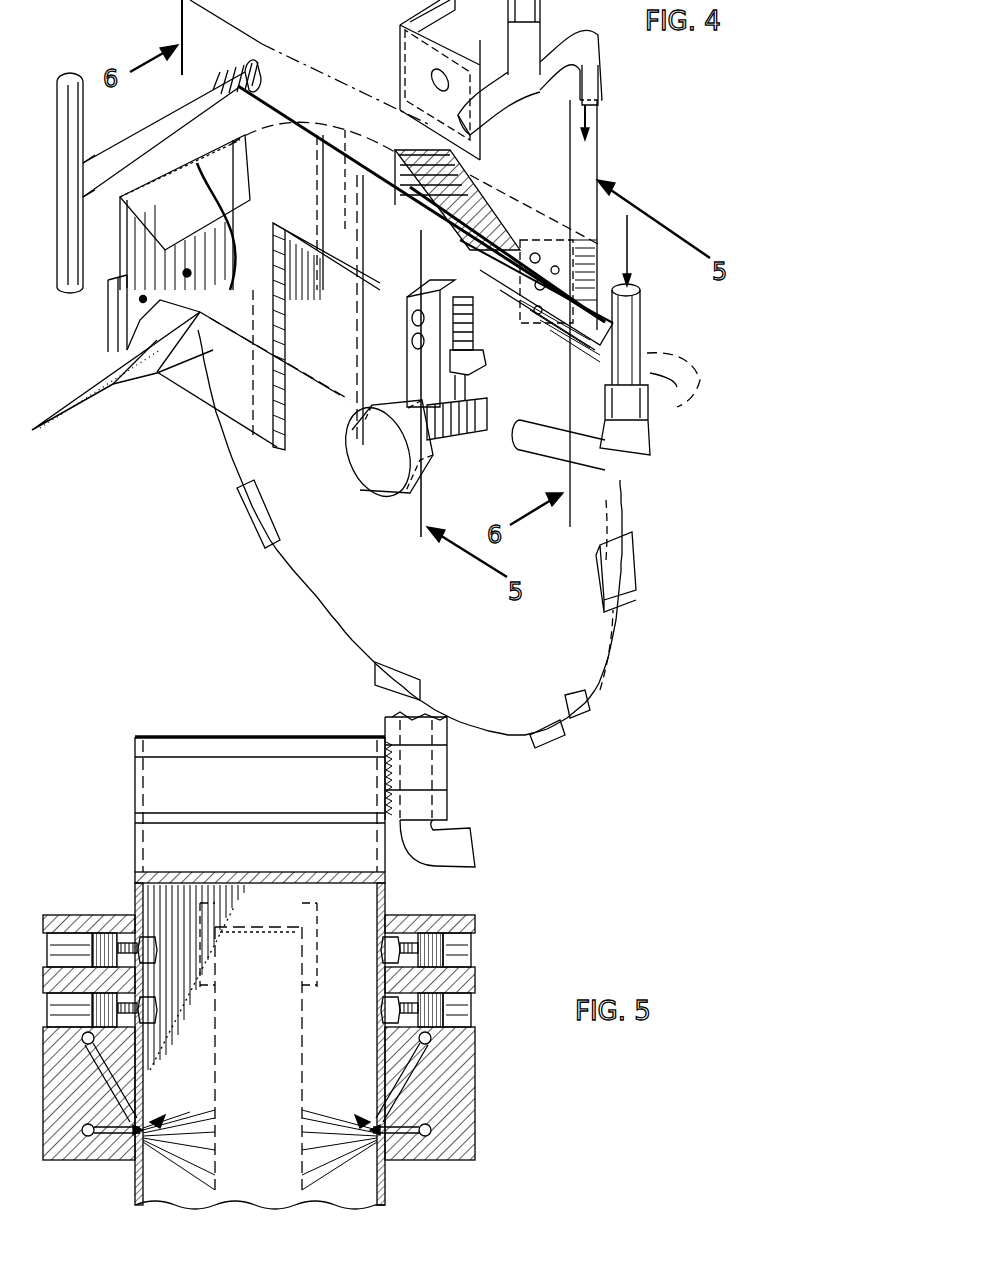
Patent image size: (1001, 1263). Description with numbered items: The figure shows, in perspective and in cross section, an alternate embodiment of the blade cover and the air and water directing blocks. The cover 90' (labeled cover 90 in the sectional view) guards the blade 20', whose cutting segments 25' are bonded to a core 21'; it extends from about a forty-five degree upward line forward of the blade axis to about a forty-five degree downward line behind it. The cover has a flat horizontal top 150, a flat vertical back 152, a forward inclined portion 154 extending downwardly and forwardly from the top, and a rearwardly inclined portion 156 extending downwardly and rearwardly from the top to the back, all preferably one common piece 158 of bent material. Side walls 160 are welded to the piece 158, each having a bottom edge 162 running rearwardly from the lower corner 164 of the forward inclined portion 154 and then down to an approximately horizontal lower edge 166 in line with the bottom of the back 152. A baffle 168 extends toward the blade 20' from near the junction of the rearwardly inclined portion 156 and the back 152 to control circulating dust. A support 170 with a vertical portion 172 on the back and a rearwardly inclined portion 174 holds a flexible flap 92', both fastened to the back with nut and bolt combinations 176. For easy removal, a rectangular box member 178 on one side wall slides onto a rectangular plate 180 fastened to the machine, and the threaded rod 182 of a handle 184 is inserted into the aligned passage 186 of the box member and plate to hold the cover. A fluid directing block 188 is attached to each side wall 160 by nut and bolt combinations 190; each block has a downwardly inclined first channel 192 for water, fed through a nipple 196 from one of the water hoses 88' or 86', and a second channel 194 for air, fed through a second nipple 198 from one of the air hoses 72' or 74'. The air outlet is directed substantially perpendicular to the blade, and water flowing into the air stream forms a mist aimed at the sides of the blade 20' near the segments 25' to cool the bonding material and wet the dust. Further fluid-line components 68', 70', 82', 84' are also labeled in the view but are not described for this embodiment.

In FIG. 4, the blade 20' is at (448, 532).
In FIG. 5, the blade 20' is at (287, 1058).
In FIG. 4, the core 21' is at (445, 614).
In FIG. 4, the cutting segments 25' is at (641, 572).
In FIG. 5, the cutting segments 25' is at (279, 940).
In FIG. 4, the vertical pipe 68' is at (646, 300).
In FIG. 4, the pipe fitting 70' is at (650, 421).
In FIG. 4, the hose 72' is at (686, 377).
In FIG. 4, the hose 74' is at (583, 454).
In FIG. 4, the inlet pipe 82' is at (543, 37).
In FIG. 4, the elbow pipe 84' is at (581, 56).
In FIG. 4, the hose 86' is at (604, 295).
In FIG. 4, the hose 88' is at (472, 103).
In FIG. 5, the cover 90 is at (240, 787).
In FIG. 4, the cover 90' is at (421, 177).
In FIG. 4, the flexible flap 92' is at (122, 371).
In FIG. 4, the top 150 is at (350, 75).
In FIG. 4, the back 152 is at (148, 242).
In FIG. 4, the forward inclined portion 154 is at (518, 195).
In FIG. 5, the forward inclined portion 154 is at (320, 772).
In FIG. 4, the rearwardly inclined portion 156 is at (268, 112).
In FIG. 4, the common piece 158 is at (512, 158).
In FIG. 5, the common piece 158 is at (253, 760).
In FIG. 4, the side walls 160 is at (192, 402).
In FIG. 5, the side walls 160 is at (393, 898).
In FIG. 4, the bottom edge 162 is at (377, 286).
In FIG. 4, the lower corner 164 is at (560, 370).
In FIG. 4, the lower edge 166 is at (250, 440).
In FIG. 4, the baffle 168 is at (183, 207).
In FIG. 4, the support 170 is at (138, 358).
In FIG. 4, the vertical portion 172 is at (125, 316).
In FIG. 4, the rearwardly inclined portion 174 is at (113, 373).
In FIG. 4, the nut and bolt combinations 176 is at (183, 273).
In FIG. 4, the rectangular box member 178 is at (408, 18).
In FIG. 5, the rectangular box member 178 is at (448, 780).
In FIG. 4, the rectangular plate 180 is at (465, 12).
In FIG. 5, the rectangular plate 180 is at (402, 712).
In FIG. 4, the threaded rod 182 is at (225, 74).
In FIG. 4, the handle 184 is at (83, 115).
In FIG. 4, the aligned passage 186 is at (432, 78).
In FIG. 4, the fluid directing block 188 is at (408, 354).
In FIG. 5, the fluid directing block 188 is at (485, 1062).
In FIG. 5, the nut and bolt combinations 190 is at (100, 925).
In FIG. 5, the first channel 192 is at (122, 1092).
In FIG. 5, the second channel 194 is at (95, 1138).
In FIG. 4, the nipple 196 is at (452, 358).
In FIG. 4, the second nipple 198 is at (467, 405).